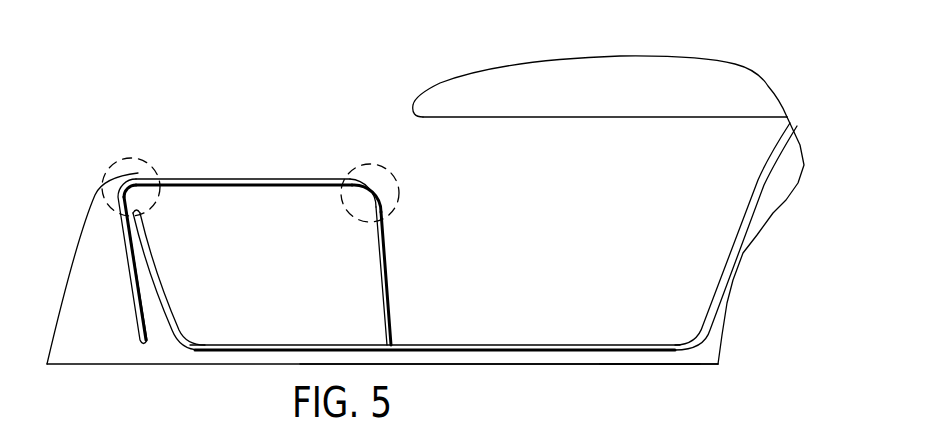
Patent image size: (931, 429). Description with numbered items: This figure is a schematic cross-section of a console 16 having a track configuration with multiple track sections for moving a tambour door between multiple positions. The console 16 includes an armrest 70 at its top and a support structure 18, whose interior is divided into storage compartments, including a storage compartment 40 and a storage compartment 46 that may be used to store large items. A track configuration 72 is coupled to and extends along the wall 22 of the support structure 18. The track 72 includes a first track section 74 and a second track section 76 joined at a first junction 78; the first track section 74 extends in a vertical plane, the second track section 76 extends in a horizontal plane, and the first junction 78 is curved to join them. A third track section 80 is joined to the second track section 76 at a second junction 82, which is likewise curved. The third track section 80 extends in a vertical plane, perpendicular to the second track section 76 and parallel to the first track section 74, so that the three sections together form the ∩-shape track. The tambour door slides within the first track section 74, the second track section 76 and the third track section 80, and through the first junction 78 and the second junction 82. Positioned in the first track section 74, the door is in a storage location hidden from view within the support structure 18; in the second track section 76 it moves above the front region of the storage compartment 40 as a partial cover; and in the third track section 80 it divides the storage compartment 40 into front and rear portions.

The console 16 is at (64, 115).
The support structure 18 is at (795, 123).
The wall 22 is at (705, 357).
The storage compartment 40 is at (487, 350).
The storage compartment 46 is at (582, 332).
The armrest 70 is at (629, 62).
The track configuration 72 is at (259, 120).
The first track section 74 is at (132, 303).
The second track section 76 is at (247, 180).
The first junction 78 is at (133, 158).
The third track section 80 is at (388, 268).
The second junction 82 is at (370, 166).